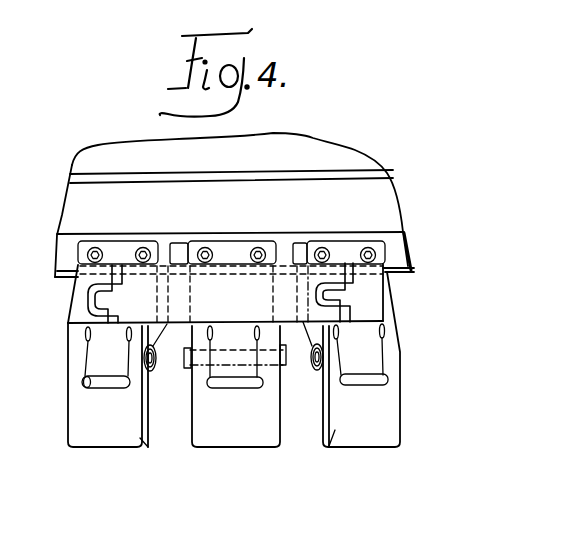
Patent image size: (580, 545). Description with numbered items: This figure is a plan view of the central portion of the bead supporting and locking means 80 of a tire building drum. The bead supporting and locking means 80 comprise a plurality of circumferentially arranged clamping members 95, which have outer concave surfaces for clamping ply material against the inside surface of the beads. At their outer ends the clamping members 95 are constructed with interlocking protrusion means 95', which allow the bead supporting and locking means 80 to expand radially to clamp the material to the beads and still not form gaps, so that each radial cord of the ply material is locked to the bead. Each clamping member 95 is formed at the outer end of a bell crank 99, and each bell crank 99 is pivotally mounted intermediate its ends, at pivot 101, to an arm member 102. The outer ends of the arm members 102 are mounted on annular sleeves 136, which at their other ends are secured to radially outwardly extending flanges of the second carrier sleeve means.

The annular sleeve 136 is at (390, 186).
The clamping member 95 is at (225, 258).
The interlocking protrusion means 95' is at (234, 314).
The bell crank 99 is at (95, 331).
The pivot 101 is at (312, 366).
The arm member 102 is at (333, 437).
The bead supporting and locking means 80 is at (58, 383).